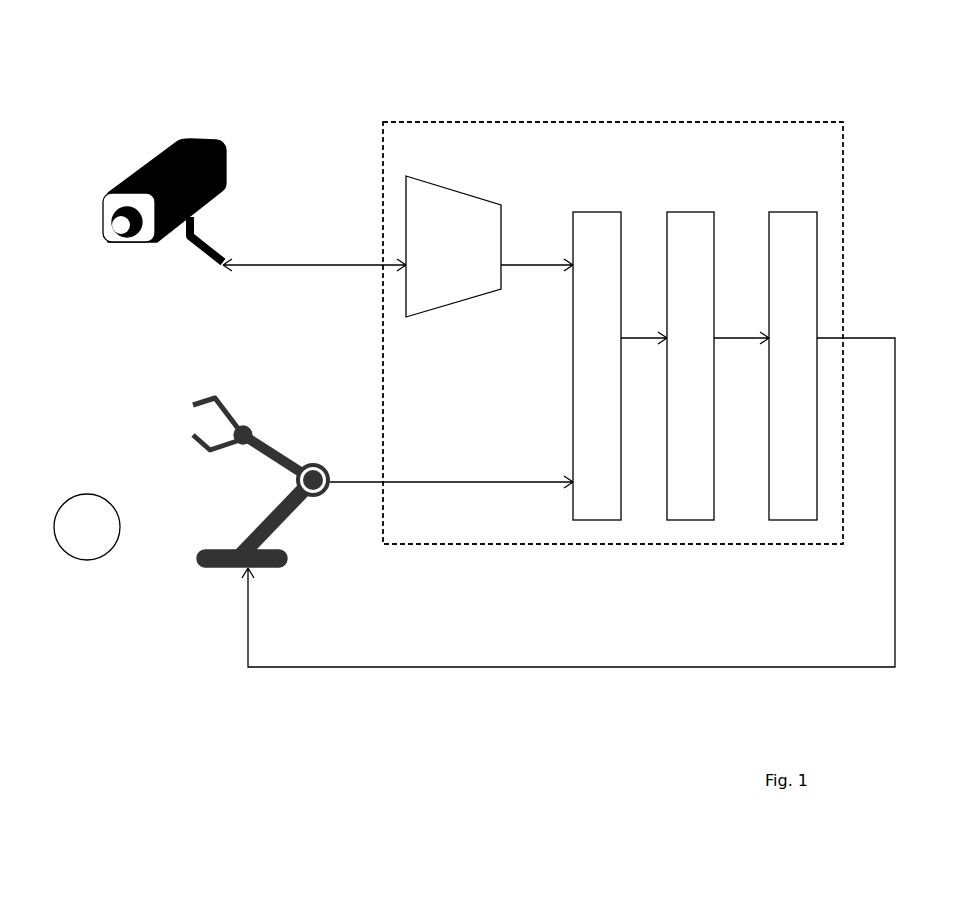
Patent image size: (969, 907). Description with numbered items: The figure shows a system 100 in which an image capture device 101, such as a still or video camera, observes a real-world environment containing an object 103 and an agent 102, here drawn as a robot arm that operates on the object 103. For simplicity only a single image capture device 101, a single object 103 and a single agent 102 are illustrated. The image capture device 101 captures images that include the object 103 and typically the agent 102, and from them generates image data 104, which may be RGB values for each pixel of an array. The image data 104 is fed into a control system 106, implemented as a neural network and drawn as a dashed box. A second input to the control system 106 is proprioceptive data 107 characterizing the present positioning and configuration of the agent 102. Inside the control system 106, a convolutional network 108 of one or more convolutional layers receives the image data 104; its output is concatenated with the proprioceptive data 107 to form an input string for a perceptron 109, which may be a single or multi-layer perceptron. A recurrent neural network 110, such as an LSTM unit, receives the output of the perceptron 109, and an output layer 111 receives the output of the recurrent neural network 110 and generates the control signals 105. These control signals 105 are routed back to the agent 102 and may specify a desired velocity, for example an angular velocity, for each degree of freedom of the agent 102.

The system 100 is at (777, 53).
The image capture device 101 is at (197, 138).
The agent 102 is at (225, 565).
The object 103 is at (82, 560).
The image data 104 is at (314, 281).
The control signals 105 is at (568, 526).
The control system 106 is at (482, 545).
The proprioceptive data 107 is at (451, 468).
The convolutional network 108 is at (440, 202).
The neural network (perceptron) 109 is at (585, 520).
The recurrent neural network 110 is at (680, 520).
The output layer 111 is at (782, 520).